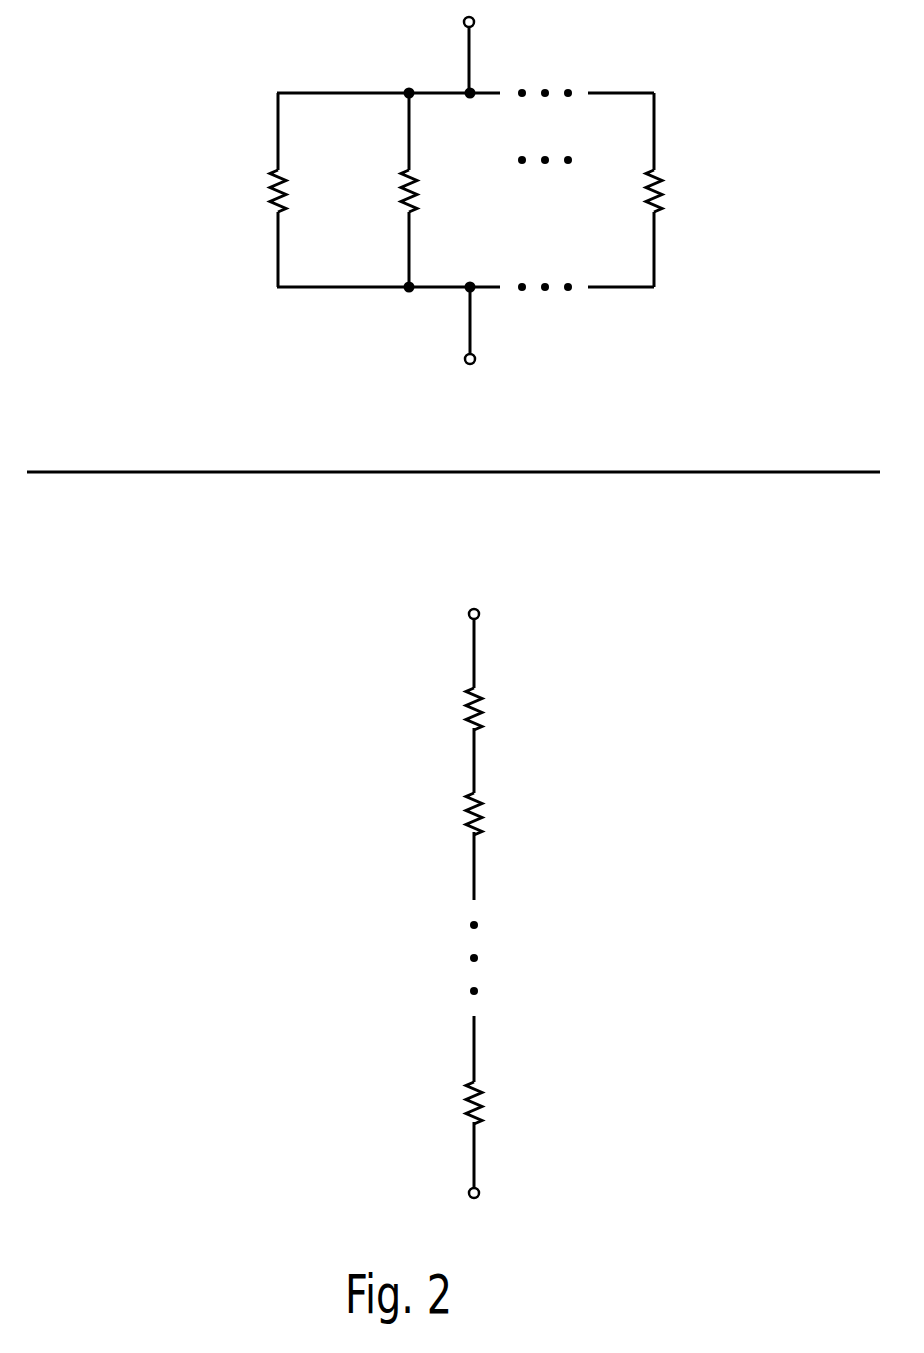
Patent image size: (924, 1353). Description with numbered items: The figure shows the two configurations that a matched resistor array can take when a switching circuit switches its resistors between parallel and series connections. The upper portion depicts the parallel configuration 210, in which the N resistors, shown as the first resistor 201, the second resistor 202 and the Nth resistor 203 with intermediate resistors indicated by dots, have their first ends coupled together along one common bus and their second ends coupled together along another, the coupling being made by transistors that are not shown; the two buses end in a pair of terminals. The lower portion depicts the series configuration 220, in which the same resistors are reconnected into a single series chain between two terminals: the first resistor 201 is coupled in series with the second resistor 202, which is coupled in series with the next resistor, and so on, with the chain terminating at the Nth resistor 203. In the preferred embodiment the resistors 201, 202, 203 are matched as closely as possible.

The parallel configuration 210 is at (395, 182).
The series configuration 220 is at (323, 868).
The resistor R1 201 is at (336, 191).
The resistor R2 202 is at (468, 191).
The resistor RN 203 is at (714, 189).